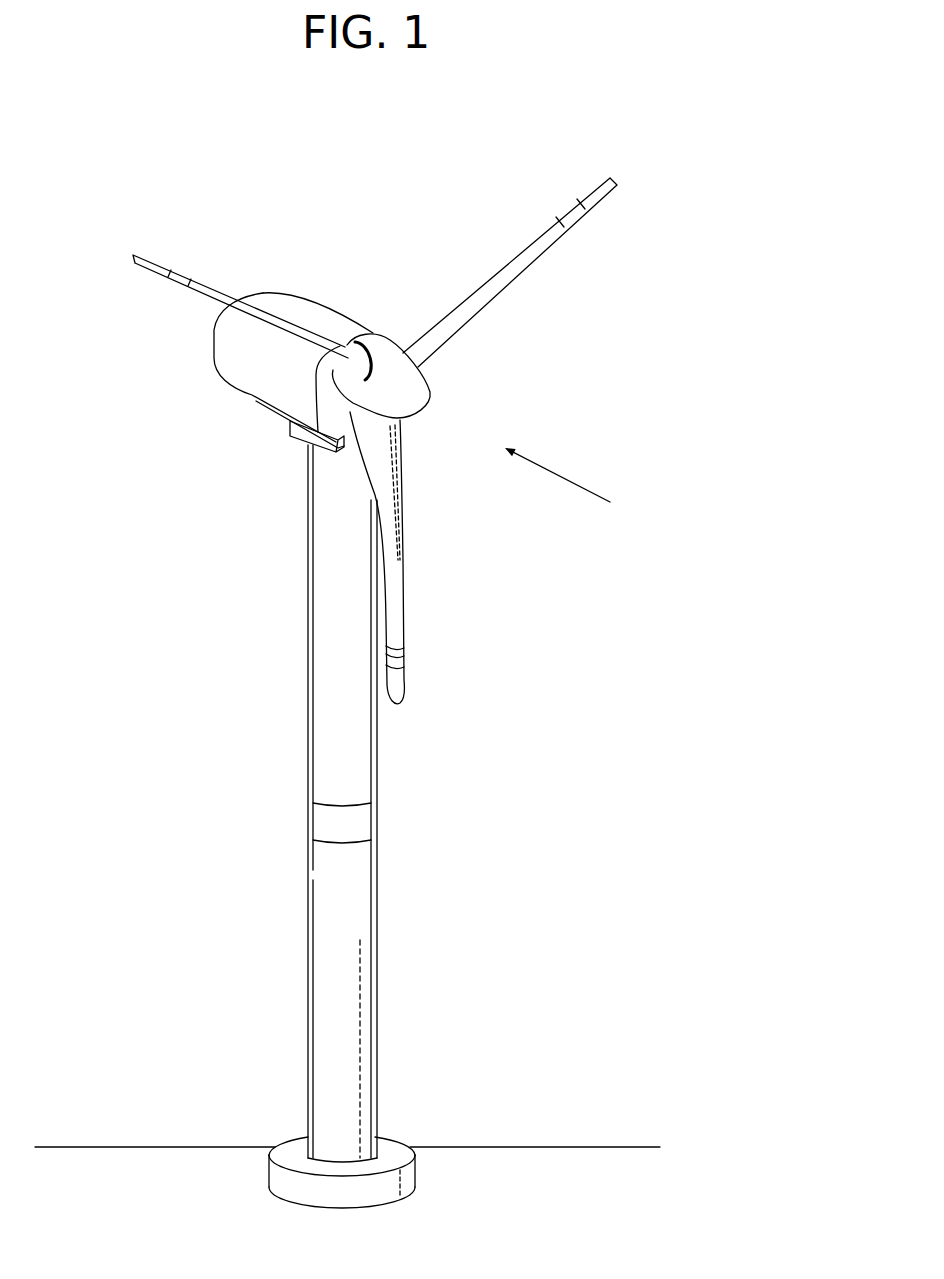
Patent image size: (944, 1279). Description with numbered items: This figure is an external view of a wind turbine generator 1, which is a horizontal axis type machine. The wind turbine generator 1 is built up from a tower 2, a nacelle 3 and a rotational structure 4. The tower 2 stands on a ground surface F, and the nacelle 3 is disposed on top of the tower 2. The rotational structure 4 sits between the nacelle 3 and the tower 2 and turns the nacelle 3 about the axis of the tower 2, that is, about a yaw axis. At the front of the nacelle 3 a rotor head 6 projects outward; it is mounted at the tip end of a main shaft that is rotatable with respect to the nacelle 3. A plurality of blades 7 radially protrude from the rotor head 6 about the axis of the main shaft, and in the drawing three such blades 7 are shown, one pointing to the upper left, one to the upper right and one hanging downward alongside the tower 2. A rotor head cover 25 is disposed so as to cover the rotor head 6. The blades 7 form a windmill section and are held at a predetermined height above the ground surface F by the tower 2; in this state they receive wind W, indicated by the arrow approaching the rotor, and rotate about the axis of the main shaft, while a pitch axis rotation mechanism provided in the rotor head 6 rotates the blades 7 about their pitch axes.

The wind turbine generator 1 is at (492, 156).
The tower 2 is at (330, 677).
The nacelle 3 is at (255, 387).
The rotational structure 4 is at (283, 432).
The rotor head 6 is at (418, 392).
The blades 7 is at (214, 290).
The rotor head cover 25 is at (387, 362).
The ground surface F is at (508, 1160).
The wind W is at (573, 483).